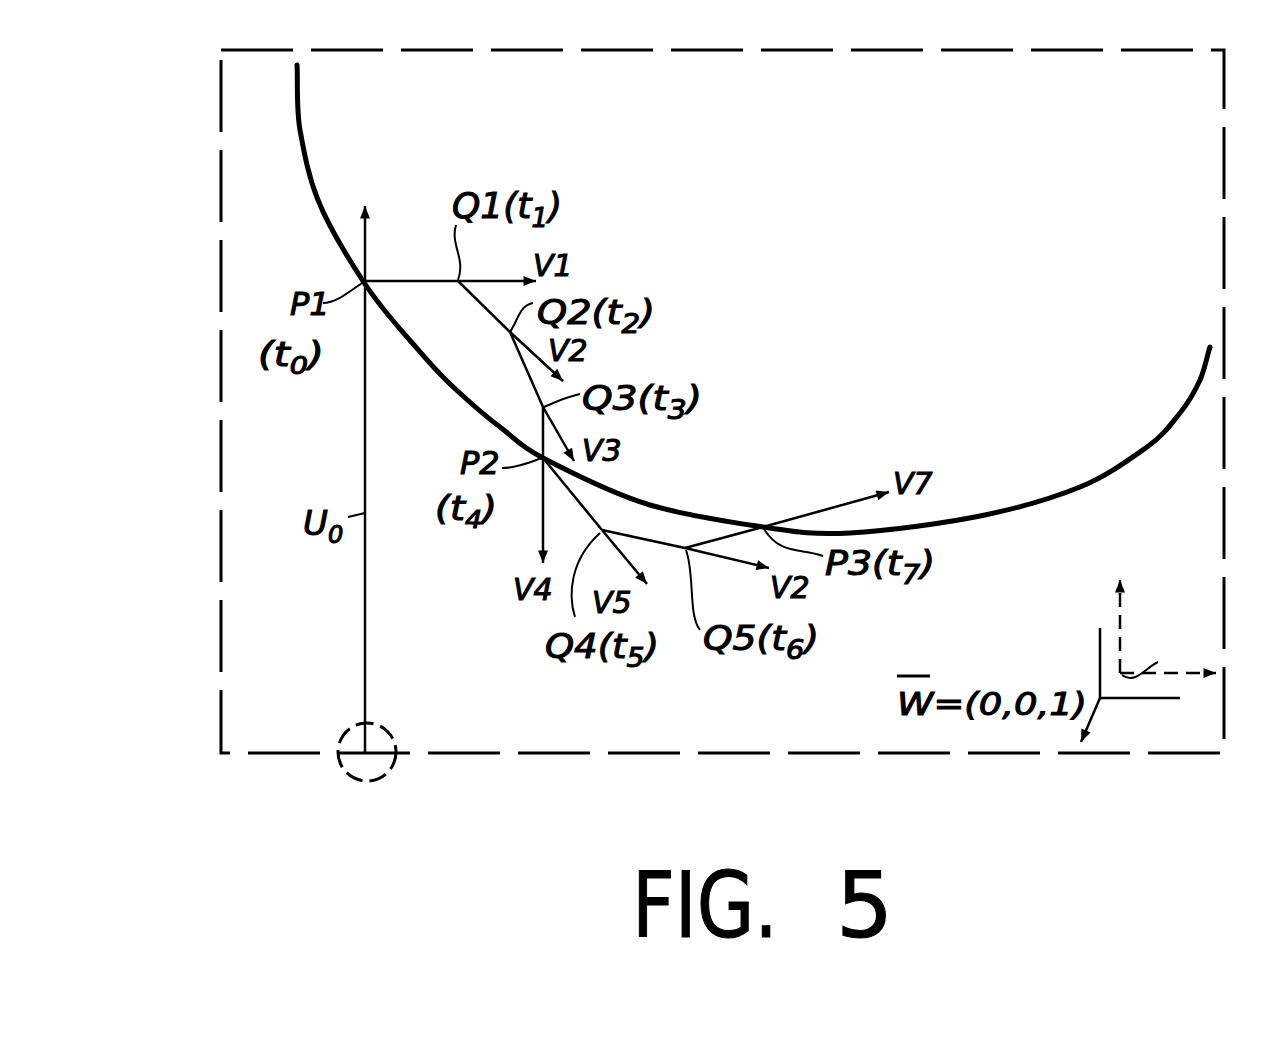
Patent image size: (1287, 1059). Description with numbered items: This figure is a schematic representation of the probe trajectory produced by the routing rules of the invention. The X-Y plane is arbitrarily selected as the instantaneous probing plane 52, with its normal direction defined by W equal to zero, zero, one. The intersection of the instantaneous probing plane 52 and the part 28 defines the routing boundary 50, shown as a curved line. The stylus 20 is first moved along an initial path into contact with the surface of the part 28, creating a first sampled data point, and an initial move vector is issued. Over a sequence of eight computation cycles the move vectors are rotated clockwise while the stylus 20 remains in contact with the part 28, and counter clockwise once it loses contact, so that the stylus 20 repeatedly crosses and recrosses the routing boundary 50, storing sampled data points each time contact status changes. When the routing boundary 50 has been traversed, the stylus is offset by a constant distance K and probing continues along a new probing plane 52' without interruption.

The stylus 20 is at (390, 775).
The part 28 is at (797, 320).
The routing boundary 50 is at (985, 516).
The instantaneous probing plane 52 is at (1107, 672).
The new probing plane 52' is at (1168, 629).